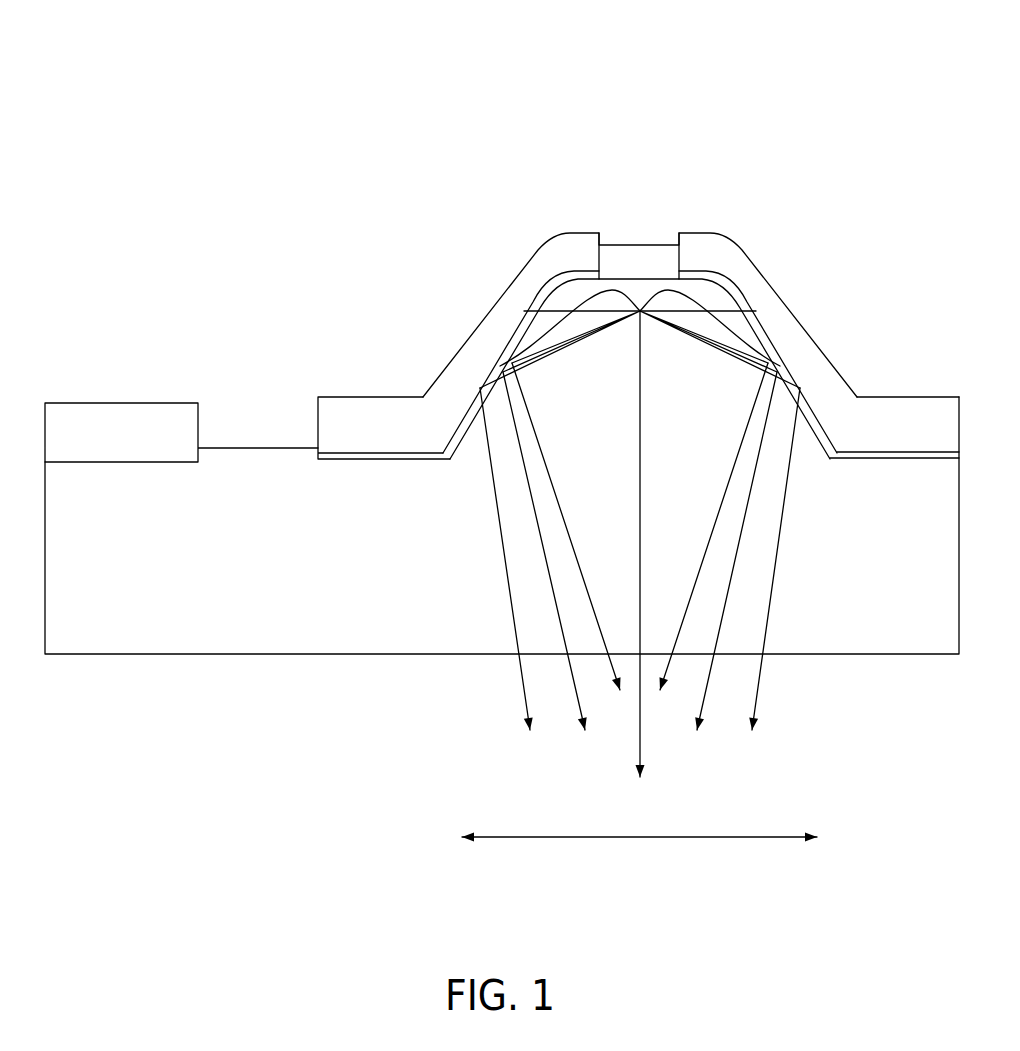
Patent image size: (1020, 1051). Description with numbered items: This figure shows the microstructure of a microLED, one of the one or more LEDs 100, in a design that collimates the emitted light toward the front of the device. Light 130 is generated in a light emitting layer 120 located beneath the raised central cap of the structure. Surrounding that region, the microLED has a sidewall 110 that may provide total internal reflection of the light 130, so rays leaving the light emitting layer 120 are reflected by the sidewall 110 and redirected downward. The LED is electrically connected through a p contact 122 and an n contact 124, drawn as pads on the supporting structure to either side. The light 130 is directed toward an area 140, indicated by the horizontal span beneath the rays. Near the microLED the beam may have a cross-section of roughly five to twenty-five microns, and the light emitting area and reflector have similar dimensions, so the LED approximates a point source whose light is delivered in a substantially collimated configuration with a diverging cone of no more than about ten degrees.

The LED 100 is at (652, 105).
The sidewall 110 is at (772, 343).
The light emitting layer 120 is at (575, 310).
The p contact 122 is at (400, 422).
The n contact 124 is at (130, 430).
The light 130 is at (503, 573).
The area 140 is at (758, 837).